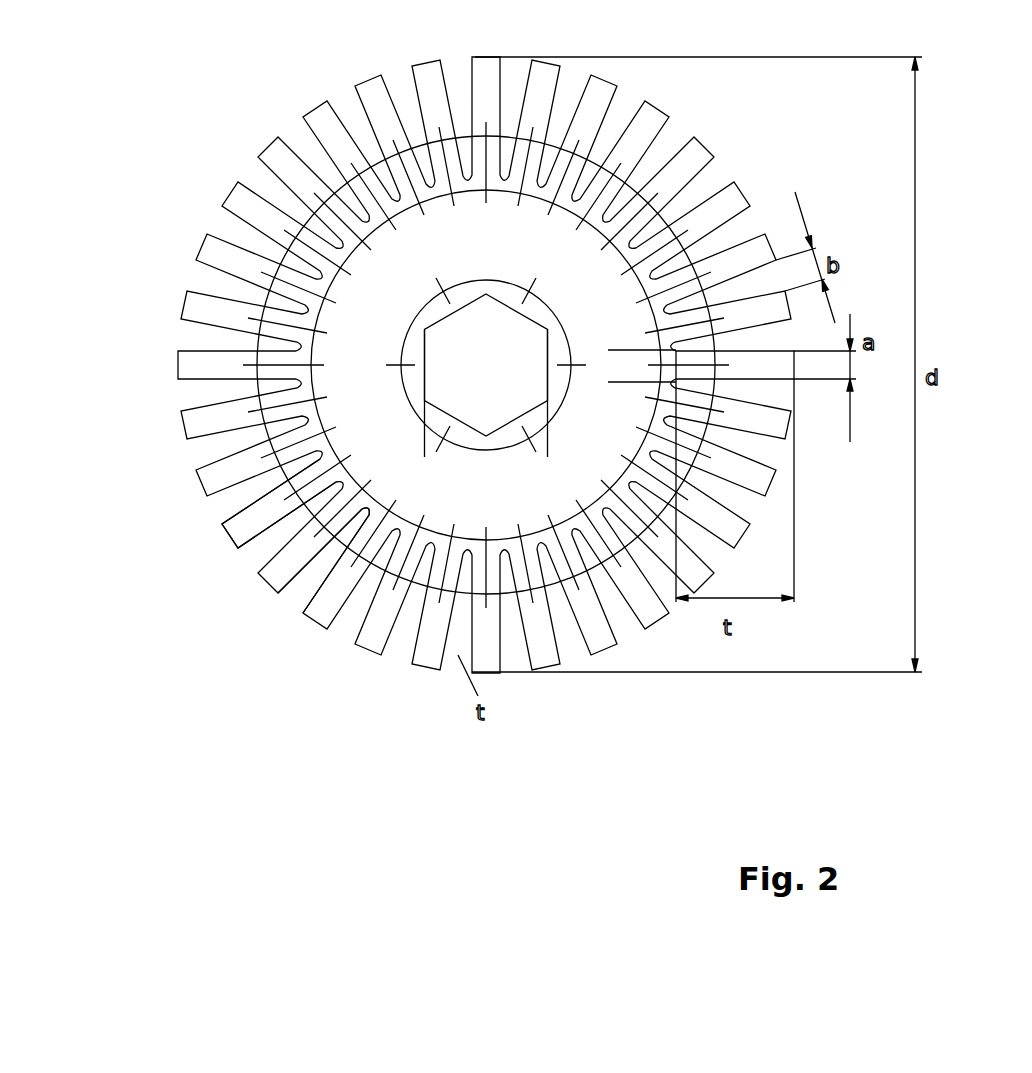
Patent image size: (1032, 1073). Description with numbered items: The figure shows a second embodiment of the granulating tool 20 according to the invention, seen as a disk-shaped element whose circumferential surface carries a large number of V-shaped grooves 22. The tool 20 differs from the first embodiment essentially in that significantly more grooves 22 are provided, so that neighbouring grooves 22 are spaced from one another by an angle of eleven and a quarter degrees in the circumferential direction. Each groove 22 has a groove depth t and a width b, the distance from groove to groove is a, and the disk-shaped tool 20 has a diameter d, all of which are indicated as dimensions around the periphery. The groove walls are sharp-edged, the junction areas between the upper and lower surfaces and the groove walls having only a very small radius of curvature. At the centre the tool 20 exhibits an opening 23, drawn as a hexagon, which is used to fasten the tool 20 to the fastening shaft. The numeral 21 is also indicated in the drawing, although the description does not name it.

The tool 20 is at (115, 347).
The slot 21 is at (368, 510).
The grooves 22 is at (250, 545).
The opening 23 is at (445, 323).